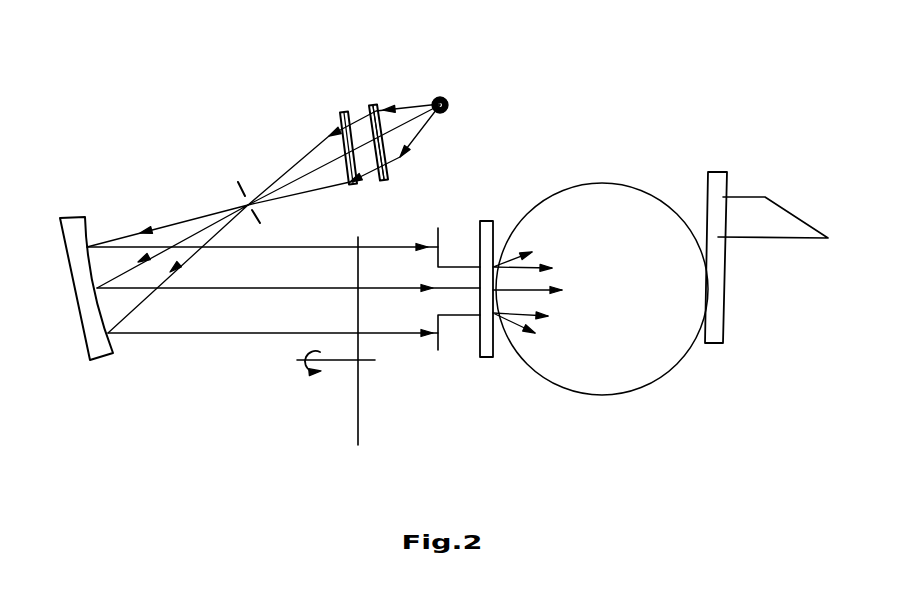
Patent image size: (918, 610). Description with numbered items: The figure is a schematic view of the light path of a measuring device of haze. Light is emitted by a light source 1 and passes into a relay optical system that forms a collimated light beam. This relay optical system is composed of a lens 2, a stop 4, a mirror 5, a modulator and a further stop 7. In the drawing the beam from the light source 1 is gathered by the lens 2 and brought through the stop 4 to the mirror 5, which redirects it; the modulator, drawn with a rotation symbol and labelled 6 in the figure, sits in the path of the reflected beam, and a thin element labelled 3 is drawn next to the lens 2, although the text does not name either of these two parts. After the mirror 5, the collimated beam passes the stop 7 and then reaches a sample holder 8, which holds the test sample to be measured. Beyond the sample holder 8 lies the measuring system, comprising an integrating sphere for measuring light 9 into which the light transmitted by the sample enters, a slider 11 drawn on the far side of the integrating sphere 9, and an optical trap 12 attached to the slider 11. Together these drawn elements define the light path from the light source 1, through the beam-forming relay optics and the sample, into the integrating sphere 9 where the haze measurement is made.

The light source 1 is at (446, 92).
The lens 2 is at (375, 104).
The filter 3 is at (381, 155).
The stop 4 is at (241, 184).
The mirror 5 is at (86, 273).
The chopper 6 is at (336, 341).
The stop 7 is at (456, 302).
The sample holder 8 is at (485, 306).
The integrating sphere 9 is at (602, 289).
The slider 11 is at (715, 271).
The optical trap 12 is at (773, 209).